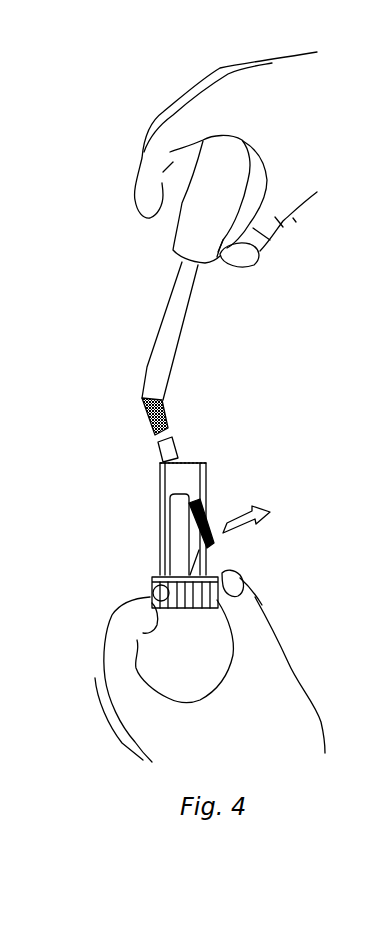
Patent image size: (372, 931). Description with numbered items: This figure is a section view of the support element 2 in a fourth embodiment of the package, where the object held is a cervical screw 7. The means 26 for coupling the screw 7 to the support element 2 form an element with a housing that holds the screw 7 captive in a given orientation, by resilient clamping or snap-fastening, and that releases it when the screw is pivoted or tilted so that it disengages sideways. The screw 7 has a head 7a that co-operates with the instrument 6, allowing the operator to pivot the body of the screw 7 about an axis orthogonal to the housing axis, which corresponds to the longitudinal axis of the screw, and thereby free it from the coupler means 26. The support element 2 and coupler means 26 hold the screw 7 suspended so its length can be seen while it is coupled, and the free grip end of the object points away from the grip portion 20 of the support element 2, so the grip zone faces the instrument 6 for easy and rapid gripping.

The instrument 6 is at (178, 322).
The head 7a is at (168, 418).
The cervical screw 7 is at (175, 455).
The coupler means 26 is at (185, 483).
The support element 2 is at (153, 578).
The grip portion 20 is at (151, 593).